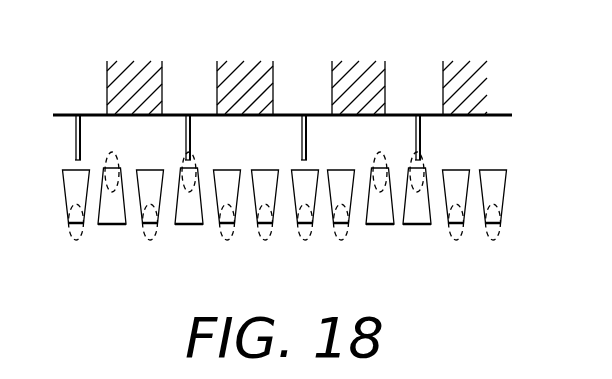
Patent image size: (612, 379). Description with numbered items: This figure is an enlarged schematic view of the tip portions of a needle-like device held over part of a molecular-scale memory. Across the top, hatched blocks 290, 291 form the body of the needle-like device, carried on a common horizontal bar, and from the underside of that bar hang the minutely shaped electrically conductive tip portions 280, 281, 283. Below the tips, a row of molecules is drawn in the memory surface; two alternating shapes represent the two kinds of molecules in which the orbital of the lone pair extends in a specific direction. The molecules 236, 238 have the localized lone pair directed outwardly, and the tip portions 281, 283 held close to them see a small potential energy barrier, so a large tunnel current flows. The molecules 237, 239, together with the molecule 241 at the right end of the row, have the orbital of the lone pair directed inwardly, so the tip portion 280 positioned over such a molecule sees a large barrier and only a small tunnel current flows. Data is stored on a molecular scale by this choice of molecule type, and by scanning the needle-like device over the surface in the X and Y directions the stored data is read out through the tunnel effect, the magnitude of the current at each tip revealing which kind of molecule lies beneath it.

The hatched support block 290 is at (126, 74).
The hatched support block 291 is at (200, 83).
The electrically conductive tip portion 280 is at (82, 142).
The electrically conductive tip portion 281 is at (192, 142).
The electrically conductive tip portion 283 is at (422, 142).
The molecule 239 is at (68, 208).
The molecule 238 is at (186, 216).
The molecule 237 is at (299, 192).
The molecule 236 is at (415, 226).
The nozzle 241 is at (492, 236).